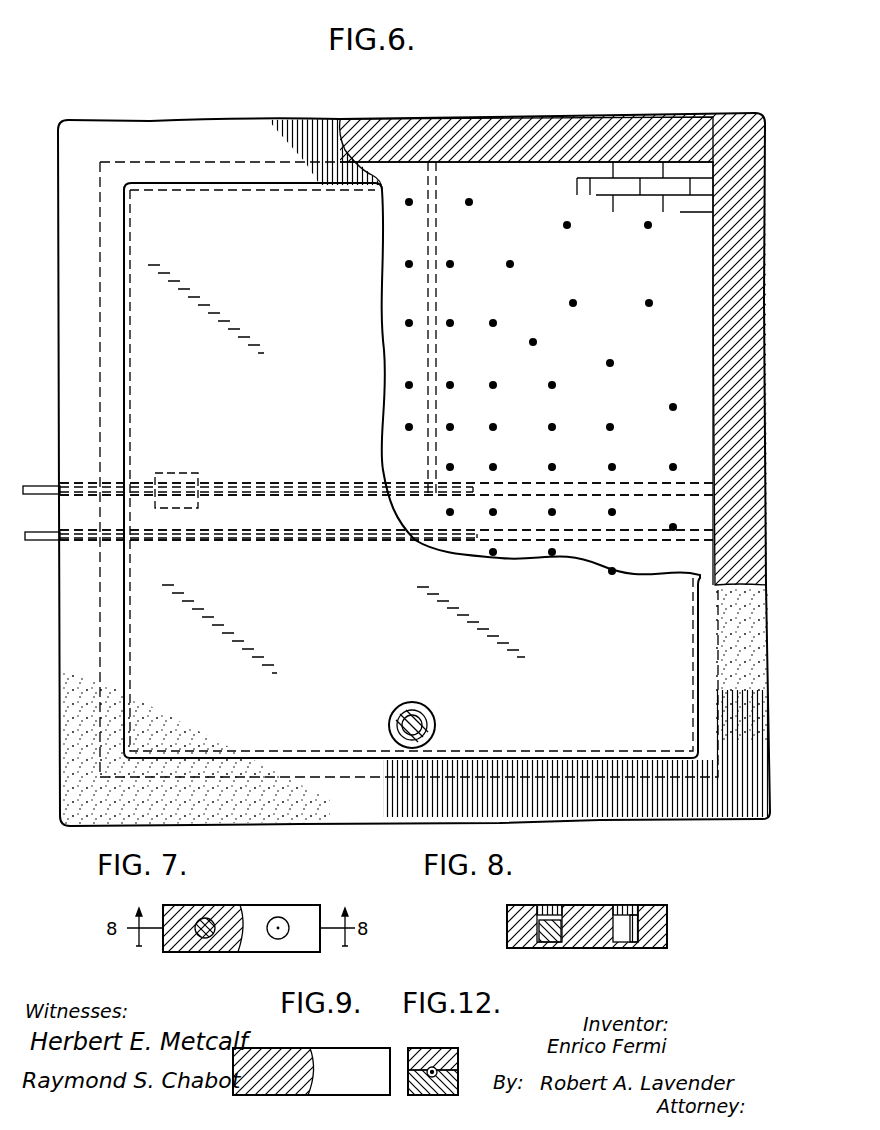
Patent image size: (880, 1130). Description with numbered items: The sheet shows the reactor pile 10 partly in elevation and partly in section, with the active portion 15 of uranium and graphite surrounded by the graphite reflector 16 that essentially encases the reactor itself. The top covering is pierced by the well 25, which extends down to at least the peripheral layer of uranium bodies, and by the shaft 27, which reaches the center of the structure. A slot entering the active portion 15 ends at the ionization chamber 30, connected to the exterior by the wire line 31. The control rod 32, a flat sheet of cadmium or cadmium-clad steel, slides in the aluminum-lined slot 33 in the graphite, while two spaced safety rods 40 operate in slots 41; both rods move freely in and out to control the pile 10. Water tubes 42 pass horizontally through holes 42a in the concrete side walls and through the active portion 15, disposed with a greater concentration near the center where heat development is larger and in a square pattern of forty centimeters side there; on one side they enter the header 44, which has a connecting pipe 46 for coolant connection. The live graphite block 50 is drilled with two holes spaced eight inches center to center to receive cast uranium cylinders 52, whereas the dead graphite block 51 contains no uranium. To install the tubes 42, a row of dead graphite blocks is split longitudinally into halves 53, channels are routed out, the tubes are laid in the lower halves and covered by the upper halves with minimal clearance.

In FIG. 6, the outer concrete shield 10 is at (72, 645).
In FIG. 6, the active portion 15 is at (693, 243).
In FIG. 6, the graphite reflector 16 is at (717, 118).
In FIG. 6, the well 25 is at (362, 128).
In FIG. 6, the shaft 27 is at (441, 350).
In FIG. 6, the ionization chamber 30 is at (185, 473).
In FIG. 6, the wire line 31 is at (45, 488).
In FIG. 6, the control rod 32 is at (52, 495).
In FIG. 6, the aluminum-lined slot 33 is at (308, 483).
In FIG. 6, the safety rods 40 is at (50, 540).
In FIG. 6, the slots 41 is at (198, 541).
In FIG. 6, the water tubes 42 is at (567, 225).
In FIG. 12, the water tubes 42 is at (436, 1066).
In FIG. 6, the holes 42a is at (610, 363).
In FIG. 6, the header 44 is at (170, 200).
In FIG. 6, the connecting pipe 46 is at (390, 710).
In FIG. 7, the live graphite block 50 is at (256, 900).
In FIG. 8, the live graphite block 50 is at (657, 918).
In FIG. 9, the dead graphite block 51 is at (308, 1048).
In FIG. 7, the uranium cylinders 52 is at (276, 940).
In FIG. 8, the uranium cylinders 52 is at (638, 948).
In FIG. 12, the halves 53 is at (458, 1070).